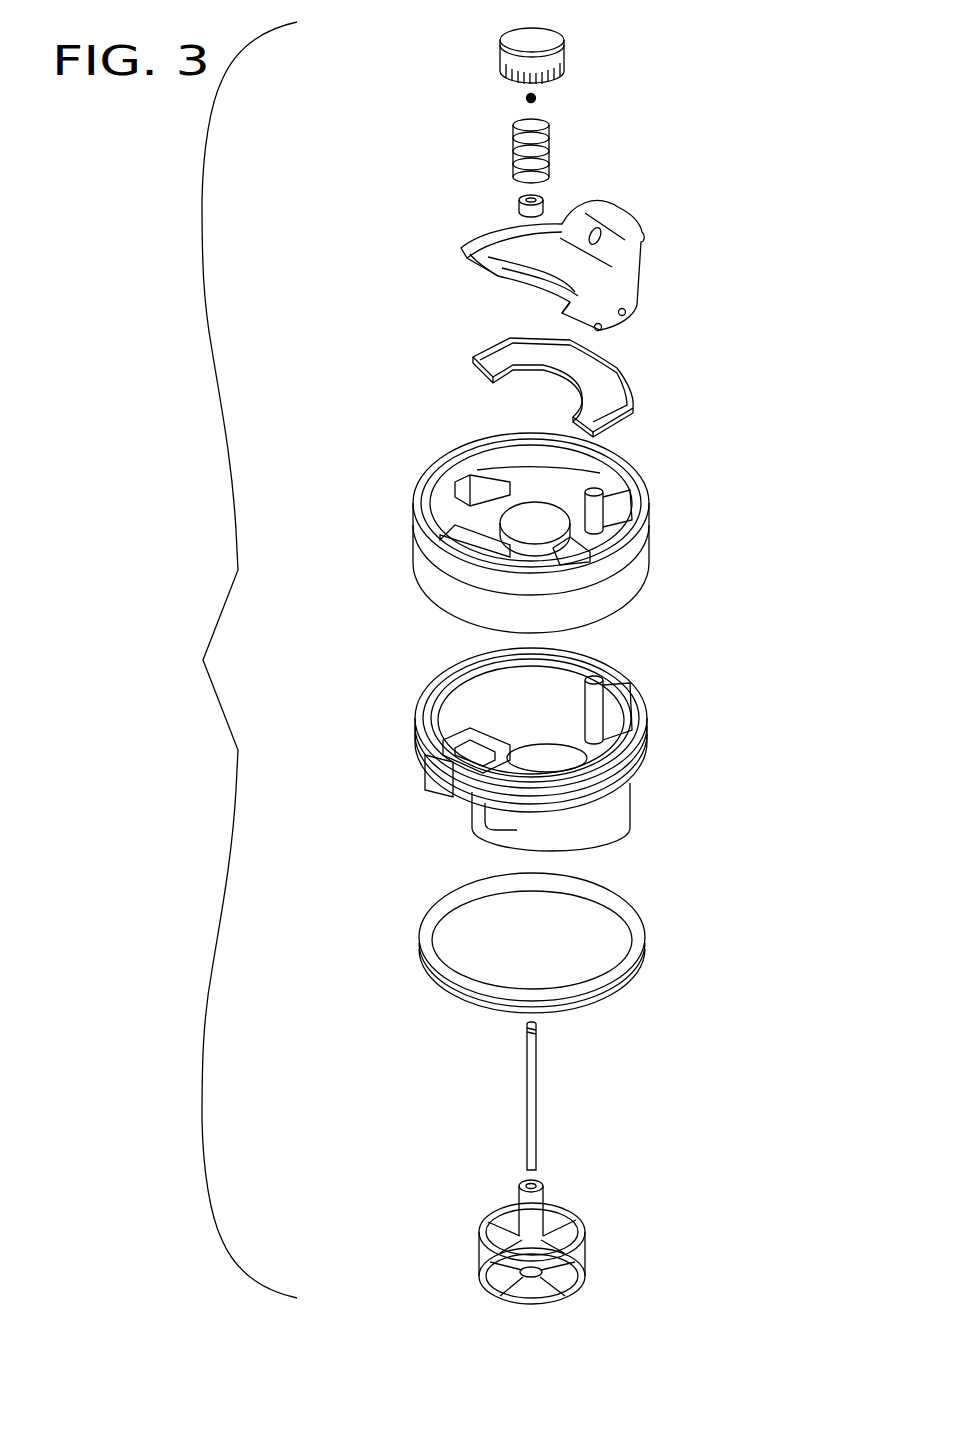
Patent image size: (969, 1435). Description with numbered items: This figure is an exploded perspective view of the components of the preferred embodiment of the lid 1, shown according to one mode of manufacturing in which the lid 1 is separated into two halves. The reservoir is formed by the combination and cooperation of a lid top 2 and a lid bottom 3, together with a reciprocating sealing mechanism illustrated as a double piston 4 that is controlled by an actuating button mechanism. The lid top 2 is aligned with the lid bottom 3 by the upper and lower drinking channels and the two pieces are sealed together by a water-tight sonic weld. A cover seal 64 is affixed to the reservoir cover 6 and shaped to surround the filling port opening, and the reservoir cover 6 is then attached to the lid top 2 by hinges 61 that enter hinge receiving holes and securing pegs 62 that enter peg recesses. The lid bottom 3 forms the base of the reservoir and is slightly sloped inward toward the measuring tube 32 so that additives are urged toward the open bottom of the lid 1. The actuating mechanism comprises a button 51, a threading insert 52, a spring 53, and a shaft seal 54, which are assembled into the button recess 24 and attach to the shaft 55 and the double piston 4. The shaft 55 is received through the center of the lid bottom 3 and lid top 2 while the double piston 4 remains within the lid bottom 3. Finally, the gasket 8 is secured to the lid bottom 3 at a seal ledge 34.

The lid 1 is at (182, 677).
The lid top 2 is at (522, 533).
The lid bottom 3 is at (554, 760).
The double piston 4 is at (537, 1200).
The reservoir cover 6 is at (621, 284).
The gasket 8 is at (645, 949).
The button recess 24 is at (518, 525).
The measuring tube 32 is at (493, 840).
The seal ledge 34 is at (630, 768).
The button 51 is at (558, 45).
The threading insert 52 is at (525, 100).
The spring 53 is at (550, 135).
The shaft seal 54 is at (520, 211).
The shaft 55 is at (532, 1093).
The hinges 61 is at (602, 328).
The securing pegs 62 is at (626, 313).
The cover seal 64 is at (473, 357).